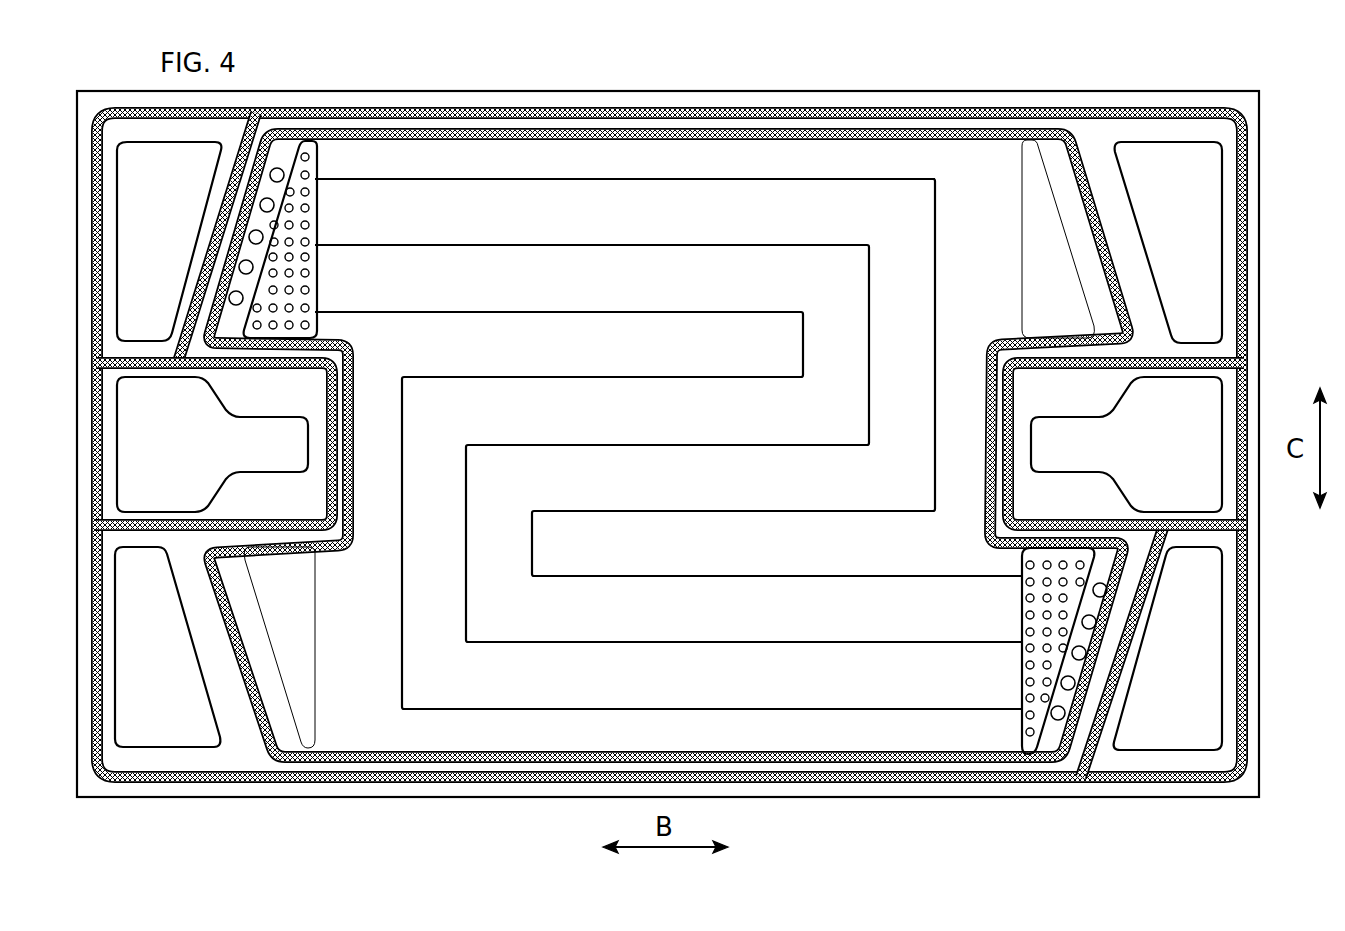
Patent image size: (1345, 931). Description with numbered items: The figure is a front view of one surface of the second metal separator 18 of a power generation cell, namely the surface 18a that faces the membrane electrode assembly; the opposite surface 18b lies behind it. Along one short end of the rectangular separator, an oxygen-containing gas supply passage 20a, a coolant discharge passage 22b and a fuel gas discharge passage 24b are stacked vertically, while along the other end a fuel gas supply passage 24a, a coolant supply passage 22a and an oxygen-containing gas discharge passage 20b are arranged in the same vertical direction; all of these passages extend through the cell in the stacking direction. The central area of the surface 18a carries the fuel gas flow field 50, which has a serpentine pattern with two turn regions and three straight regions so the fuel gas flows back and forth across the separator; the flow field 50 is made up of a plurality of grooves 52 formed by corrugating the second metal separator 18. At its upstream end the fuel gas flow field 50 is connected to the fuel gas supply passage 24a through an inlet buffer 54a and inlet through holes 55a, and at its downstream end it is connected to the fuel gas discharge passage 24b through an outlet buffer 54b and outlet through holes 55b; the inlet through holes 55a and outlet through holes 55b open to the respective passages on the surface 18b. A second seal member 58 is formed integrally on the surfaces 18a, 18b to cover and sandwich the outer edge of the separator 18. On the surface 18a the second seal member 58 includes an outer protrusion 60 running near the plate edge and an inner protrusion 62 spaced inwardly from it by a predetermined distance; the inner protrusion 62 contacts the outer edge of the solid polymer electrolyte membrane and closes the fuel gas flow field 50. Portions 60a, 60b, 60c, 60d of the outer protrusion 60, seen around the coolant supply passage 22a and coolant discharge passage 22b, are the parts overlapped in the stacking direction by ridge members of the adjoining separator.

The second metal separator 18 is at (999, 73).
The surface 18a is at (913, 789).
The surface 18b is at (968, 789).
The oxygen-containing gas supply passage 20a is at (1168, 242).
The oxygen-containing gas discharge passage 20b is at (167, 647).
The coolant supply passage 22a is at (212, 444).
The coolant discharge passage 22b is at (1126, 444).
The fuel gas supply passage 24a is at (169, 241).
The fuel gas discharge passage 24b is at (1168, 648).
The fuel gas flow field 50 is at (480, 177).
The grooves 52 is at (744, 177).
The inlet buffer 54a is at (320, 190).
The outlet buffer 54b is at (1020, 648).
The inlet through holes 55a is at (248, 234).
The outlet through holes 55b is at (1065, 715).
The second seal member 58 is at (848, 108).
The outer protrusion 60 is at (600, 109).
The part of the outer protrusion 60a is at (275, 519).
The part of the outer protrusion 60b is at (1069, 369).
The part of the outer protrusion 60c is at (275, 369).
The part of the outer protrusion 60d is at (1068, 519).
The inner protrusion 62 is at (663, 129).